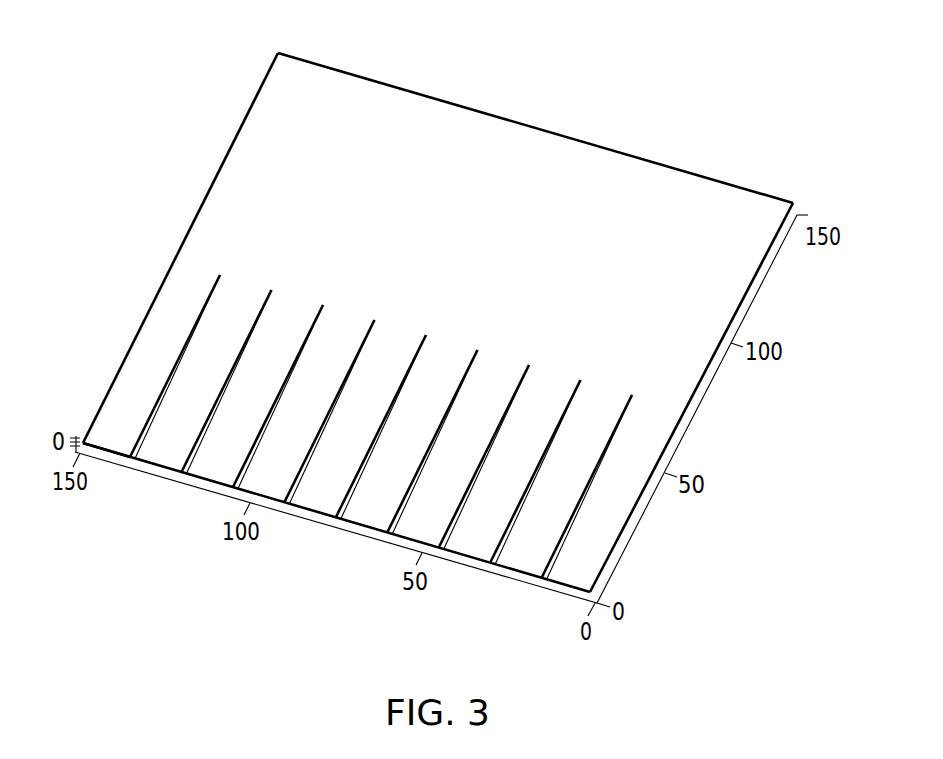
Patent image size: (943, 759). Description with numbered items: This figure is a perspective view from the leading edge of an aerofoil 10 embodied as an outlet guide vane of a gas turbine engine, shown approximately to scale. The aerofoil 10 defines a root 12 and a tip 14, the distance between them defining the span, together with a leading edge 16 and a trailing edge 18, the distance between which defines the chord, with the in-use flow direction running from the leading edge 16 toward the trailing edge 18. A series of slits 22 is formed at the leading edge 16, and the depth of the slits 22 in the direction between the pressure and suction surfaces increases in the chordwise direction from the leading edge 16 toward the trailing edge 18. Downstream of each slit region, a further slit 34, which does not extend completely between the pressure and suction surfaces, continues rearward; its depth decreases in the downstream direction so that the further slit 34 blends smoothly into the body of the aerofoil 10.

The aerofoil 10 is at (110, 213).
The root 12 is at (697, 398).
The tip 14 is at (210, 183).
The leading edge 16 is at (467, 557).
The trailing edge 18 is at (563, 134).
The slits 22 is at (139, 427).
The further slit 34 is at (212, 333).